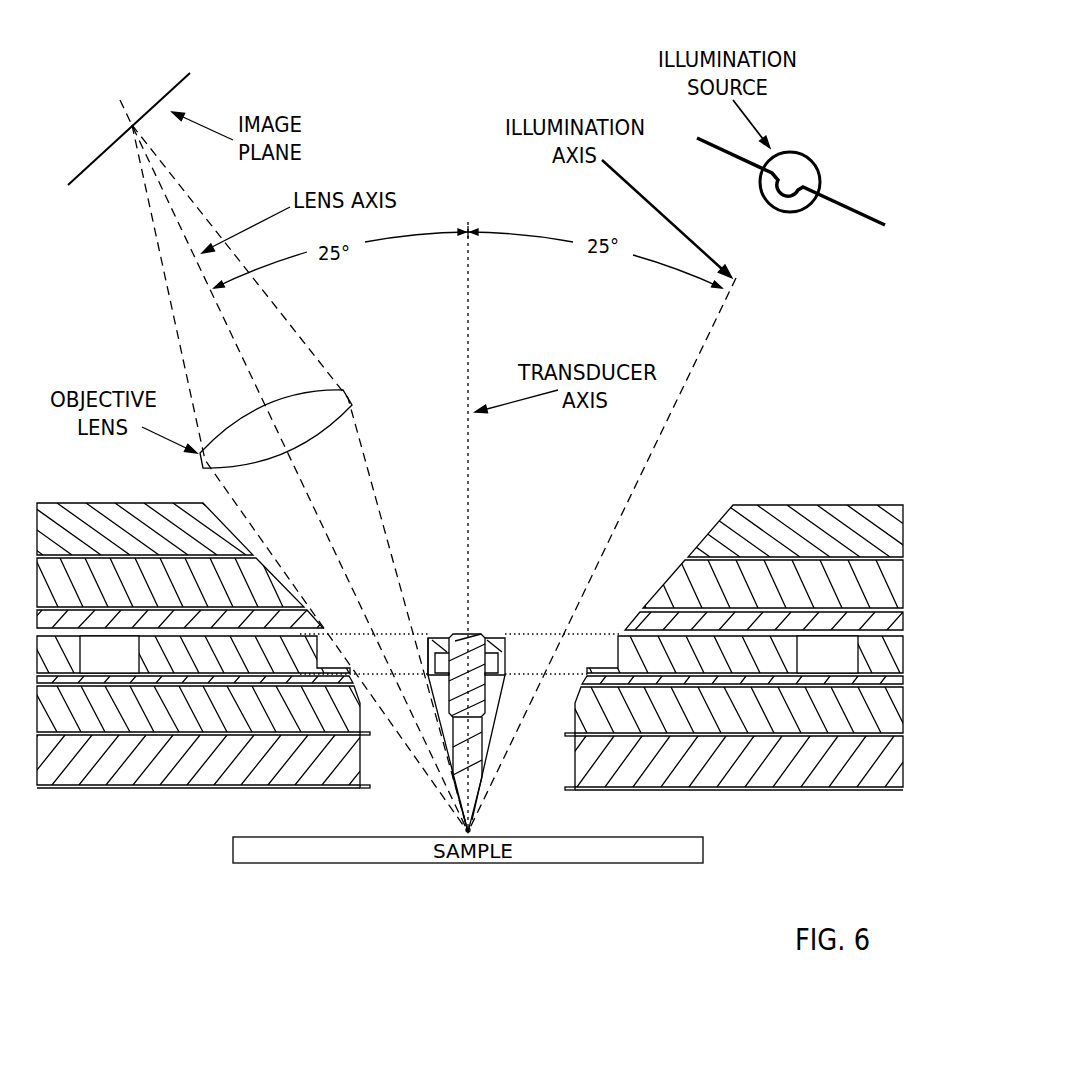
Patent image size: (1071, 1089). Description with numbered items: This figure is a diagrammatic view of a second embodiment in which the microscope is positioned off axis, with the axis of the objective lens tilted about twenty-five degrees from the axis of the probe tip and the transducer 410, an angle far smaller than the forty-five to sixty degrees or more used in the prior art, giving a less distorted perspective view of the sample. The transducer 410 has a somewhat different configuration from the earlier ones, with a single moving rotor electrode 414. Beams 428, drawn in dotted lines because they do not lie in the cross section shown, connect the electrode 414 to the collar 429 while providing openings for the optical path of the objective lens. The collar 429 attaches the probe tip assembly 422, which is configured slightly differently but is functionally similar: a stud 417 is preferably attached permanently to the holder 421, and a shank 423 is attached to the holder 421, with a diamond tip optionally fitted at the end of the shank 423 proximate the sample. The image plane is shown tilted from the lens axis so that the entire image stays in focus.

The transducer 410 is at (152, 814).
The rotor electrode 414 is at (238, 667).
The stud 417 is at (477, 636).
The holder 421 is at (497, 732).
The probe tip assembly 422 is at (495, 817).
The shank 423 is at (480, 803).
The beams 428 is at (537, 637).
The collar 429 is at (438, 637).